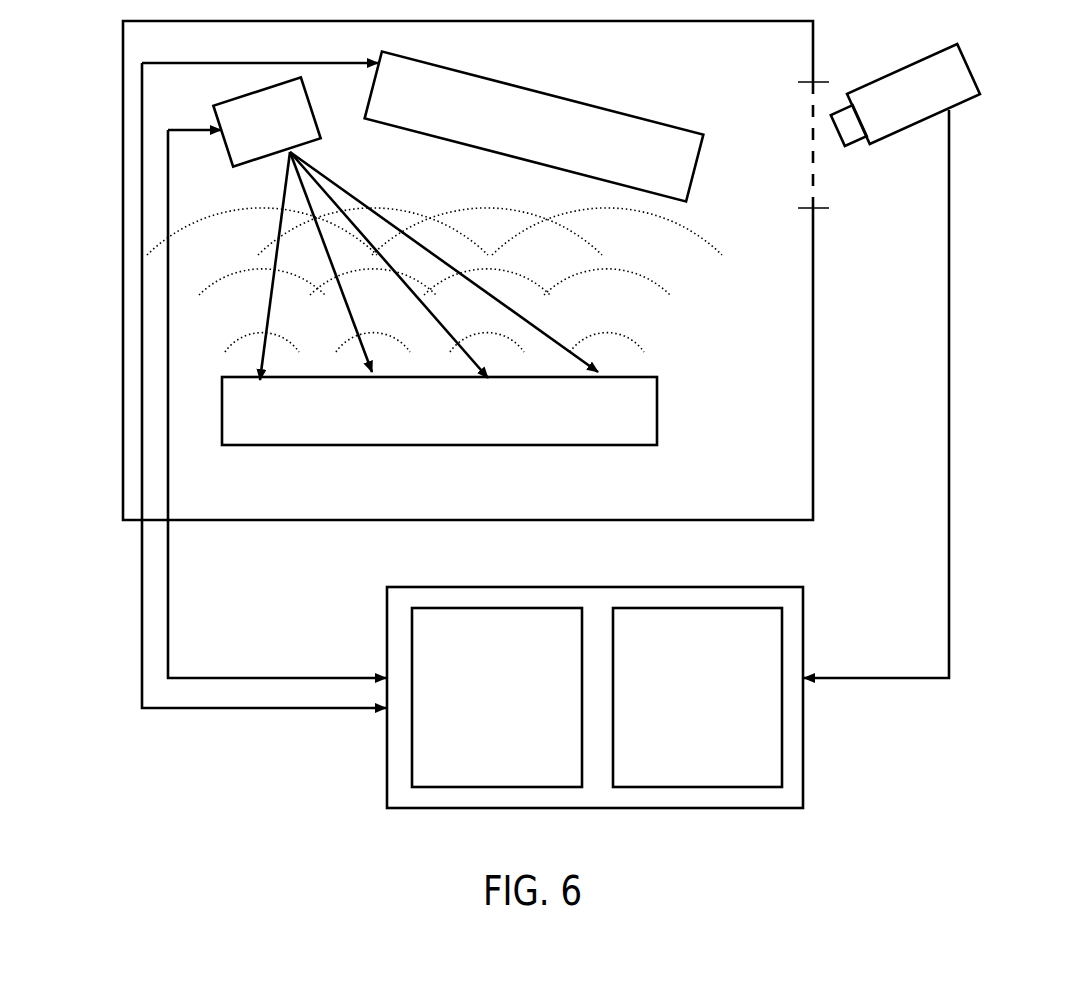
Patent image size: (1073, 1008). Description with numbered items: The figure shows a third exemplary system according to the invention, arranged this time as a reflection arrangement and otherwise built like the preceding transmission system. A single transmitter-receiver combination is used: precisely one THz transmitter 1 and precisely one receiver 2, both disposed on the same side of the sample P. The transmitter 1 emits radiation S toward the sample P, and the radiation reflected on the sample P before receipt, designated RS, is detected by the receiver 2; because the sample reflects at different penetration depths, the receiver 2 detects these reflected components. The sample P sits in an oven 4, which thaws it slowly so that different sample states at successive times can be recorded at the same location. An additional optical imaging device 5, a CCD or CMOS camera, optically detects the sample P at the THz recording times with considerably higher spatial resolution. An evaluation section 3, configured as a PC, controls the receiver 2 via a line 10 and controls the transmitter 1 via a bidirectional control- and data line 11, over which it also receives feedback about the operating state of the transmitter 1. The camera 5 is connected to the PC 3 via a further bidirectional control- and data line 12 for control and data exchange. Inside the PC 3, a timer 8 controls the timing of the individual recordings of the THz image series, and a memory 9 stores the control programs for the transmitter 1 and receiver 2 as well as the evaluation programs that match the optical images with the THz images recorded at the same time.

The THz transmitter 1 is at (266, 121).
The receiver 2 is at (534, 127).
The evaluation section 3 is at (805, 600).
The oven 4 is at (122, 134).
The optical imaging device 5 is at (903, 99).
The timer 8 is at (497, 697).
The memory 9 is at (697, 697).
The line 10 is at (142, 678).
The bidirectional control- and data line 11 is at (170, 592).
The bidirectional control- and data line 12 is at (951, 502).
The radiation S is at (323, 180).
The reflected radiation RS is at (658, 292).
The sample P is at (650, 465).